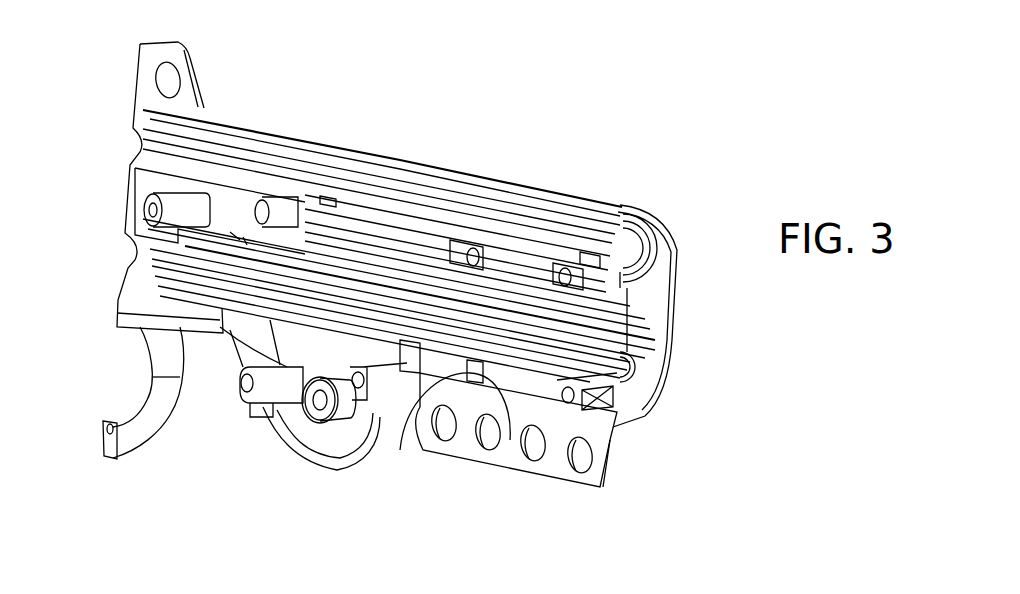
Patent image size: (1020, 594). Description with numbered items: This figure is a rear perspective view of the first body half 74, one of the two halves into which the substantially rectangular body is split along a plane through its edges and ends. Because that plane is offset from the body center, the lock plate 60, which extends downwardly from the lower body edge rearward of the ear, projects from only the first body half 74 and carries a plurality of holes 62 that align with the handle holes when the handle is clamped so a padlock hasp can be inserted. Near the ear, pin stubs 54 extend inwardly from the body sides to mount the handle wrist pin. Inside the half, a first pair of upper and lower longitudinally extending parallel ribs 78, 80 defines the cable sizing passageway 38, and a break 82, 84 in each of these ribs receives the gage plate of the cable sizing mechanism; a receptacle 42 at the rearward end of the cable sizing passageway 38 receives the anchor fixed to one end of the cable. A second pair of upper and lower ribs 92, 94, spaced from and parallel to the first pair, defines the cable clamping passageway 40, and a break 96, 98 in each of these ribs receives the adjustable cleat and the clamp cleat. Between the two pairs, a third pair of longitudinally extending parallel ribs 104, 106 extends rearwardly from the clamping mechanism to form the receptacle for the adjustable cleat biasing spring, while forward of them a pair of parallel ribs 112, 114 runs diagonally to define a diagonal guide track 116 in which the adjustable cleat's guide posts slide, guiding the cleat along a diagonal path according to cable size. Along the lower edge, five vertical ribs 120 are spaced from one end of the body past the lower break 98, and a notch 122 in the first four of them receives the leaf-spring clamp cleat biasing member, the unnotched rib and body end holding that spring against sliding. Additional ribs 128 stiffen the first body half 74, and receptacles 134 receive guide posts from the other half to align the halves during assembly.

The cable sizing passageway 38 is at (523, 215).
The cable clamping passageway 40 is at (150, 328).
The receptacle 42 is at (660, 287).
The pin stubs 54 is at (312, 440).
The lock plate 60 is at (607, 484).
The holes 62 is at (487, 440).
The first body half 74 is at (434, 51).
The upper longitudinally extending rib 78 is at (510, 292).
The lower longitudinally extending rib 80 is at (648, 260).
The break 82 is at (347, 163).
The break 84 is at (365, 197).
The upper longitudinally extending rib 92 is at (565, 348).
The lower longitudinally extending rib 94 is at (638, 366).
The break 96 is at (406, 310).
The lower break 98 is at (263, 417).
The longitudinally extending parallel rib 104 is at (420, 282).
The longitudinally extending parallel rib 106 is at (430, 283).
The diagonal rib 112 is at (238, 237).
The diagonal rib 114 is at (245, 240).
The diagonal guide track 116 is at (402, 245).
The vertical ribs 120 is at (510, 440).
The notch 122 is at (410, 420).
The additional ribs 128 is at (533, 280).
The receptacles 134 is at (312, 200).